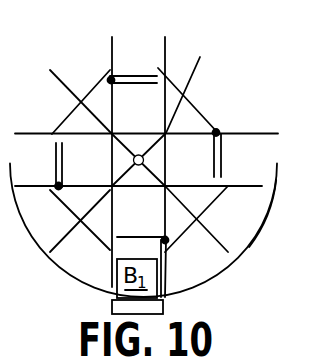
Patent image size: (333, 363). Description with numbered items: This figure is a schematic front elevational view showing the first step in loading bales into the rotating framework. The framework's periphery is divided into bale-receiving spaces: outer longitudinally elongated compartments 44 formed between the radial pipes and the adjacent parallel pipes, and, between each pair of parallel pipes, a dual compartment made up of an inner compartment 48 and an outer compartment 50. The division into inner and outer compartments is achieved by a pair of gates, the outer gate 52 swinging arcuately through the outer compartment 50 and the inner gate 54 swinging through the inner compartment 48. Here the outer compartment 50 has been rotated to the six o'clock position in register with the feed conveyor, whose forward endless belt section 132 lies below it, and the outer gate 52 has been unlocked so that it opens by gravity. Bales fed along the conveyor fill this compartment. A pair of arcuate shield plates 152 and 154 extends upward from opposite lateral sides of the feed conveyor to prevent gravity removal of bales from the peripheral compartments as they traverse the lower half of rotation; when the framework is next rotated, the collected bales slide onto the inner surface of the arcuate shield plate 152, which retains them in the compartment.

The outer longitudinally elongated compartment 44 is at (71, 53).
The inner compartment 48 is at (187, 138).
The outer compartment 50 is at (128, 49).
The outer gate 52 is at (45, 153).
The inner gate 54 is at (55, 143).
The forward endless belt section 132 is at (157, 300).
The arcuate shield plate 152 is at (45, 257).
The arcuate shield plate 154 is at (259, 210).